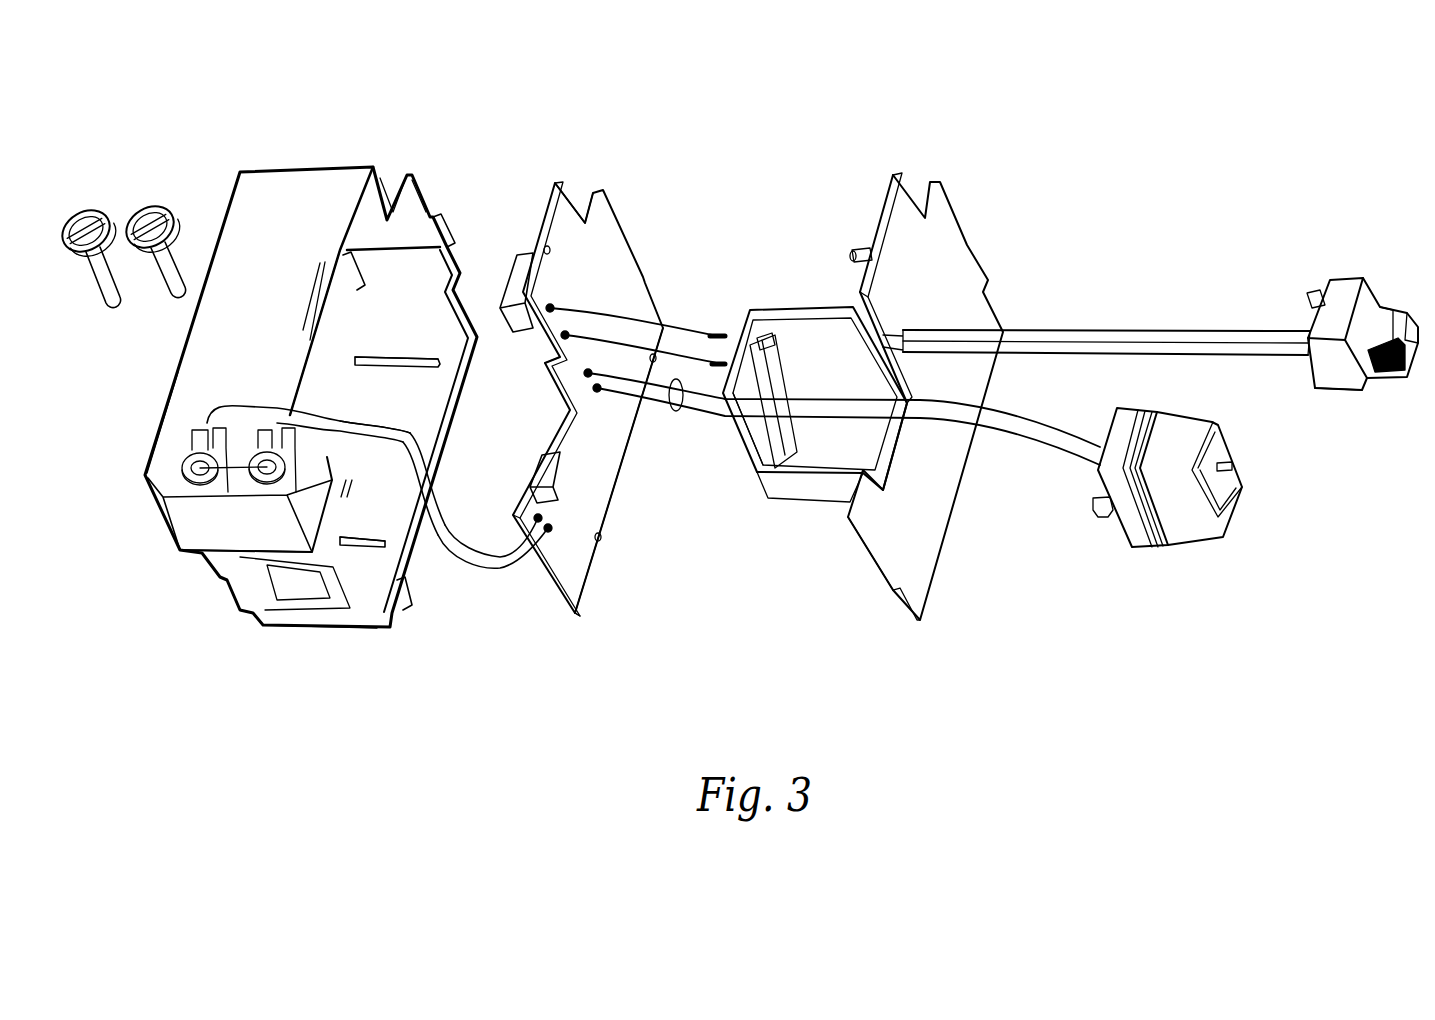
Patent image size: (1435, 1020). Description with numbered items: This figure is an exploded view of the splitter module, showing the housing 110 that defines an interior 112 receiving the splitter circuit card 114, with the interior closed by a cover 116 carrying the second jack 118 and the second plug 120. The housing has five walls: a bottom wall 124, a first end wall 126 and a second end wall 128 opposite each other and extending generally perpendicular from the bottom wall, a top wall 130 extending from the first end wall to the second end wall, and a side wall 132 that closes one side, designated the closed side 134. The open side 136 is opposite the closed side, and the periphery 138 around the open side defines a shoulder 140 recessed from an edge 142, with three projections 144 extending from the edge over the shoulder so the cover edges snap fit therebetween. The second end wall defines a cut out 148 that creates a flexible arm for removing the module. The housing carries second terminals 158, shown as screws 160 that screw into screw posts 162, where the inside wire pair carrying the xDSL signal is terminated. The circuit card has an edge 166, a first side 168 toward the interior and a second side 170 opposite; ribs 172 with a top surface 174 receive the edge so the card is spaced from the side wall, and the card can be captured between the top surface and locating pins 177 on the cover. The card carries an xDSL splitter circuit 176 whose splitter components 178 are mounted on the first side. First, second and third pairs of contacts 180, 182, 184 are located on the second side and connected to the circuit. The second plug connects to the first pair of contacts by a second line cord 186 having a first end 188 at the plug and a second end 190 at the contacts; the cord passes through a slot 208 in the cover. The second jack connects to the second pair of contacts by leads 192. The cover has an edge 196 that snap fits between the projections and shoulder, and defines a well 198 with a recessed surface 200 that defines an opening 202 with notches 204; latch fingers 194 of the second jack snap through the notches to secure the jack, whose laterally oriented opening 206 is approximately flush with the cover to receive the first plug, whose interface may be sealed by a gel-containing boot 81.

The boot 81 is at (1345, 386).
The housing 110 is at (263, 172).
The interior 112 is at (432, 497).
The splitter circuit card 114 is at (615, 483).
The cover 116 is at (942, 545).
The second jack 118 is at (1200, 540).
The second plug 120 is at (1383, 395).
The bottom wall 124 is at (428, 428).
The first end wall 126 is at (420, 188).
The second end wall 128 is at (218, 566).
The top wall 130 is at (333, 167).
The side wall 132 is at (328, 360).
The closed side 134 is at (178, 362).
The open side 136 is at (430, 530).
The periphery 138 is at (430, 560).
The shoulder 140 is at (440, 468).
The edge 142 is at (535, 380).
The projections 144 is at (448, 226).
The cut out 148 is at (350, 484).
The second terminals 158 is at (250, 470).
The screws 160 is at (150, 206).
The screw posts 162 is at (262, 490).
The edge 166 is at (568, 612).
The first side 168 is at (537, 565).
The second side 170 is at (588, 582).
The ribs 172 is at (360, 372).
The top surface 174 is at (450, 362).
The xDSL splitter circuit 176 is at (537, 233).
The locating pins 177 is at (852, 252).
The splitter components 178 is at (515, 282).
The first pair of contacts 180 is at (565, 335).
The second pair of contacts 182 is at (597, 392).
The third pair of contacts 184 is at (548, 528).
The second line cord 186 is at (1140, 331).
The first end 188 is at (1280, 331).
The second end 190 is at (950, 332).
The leads 192 is at (676, 411).
The latch fingers 194 is at (1098, 517).
The edge 196 is at (866, 546).
The well 198 is at (808, 482).
The recessed surface 200 is at (758, 430).
The opening 202 is at (785, 392).
The notches 204 is at (780, 362).
The opening 206 is at (1232, 468).
The slot 208 is at (878, 307).